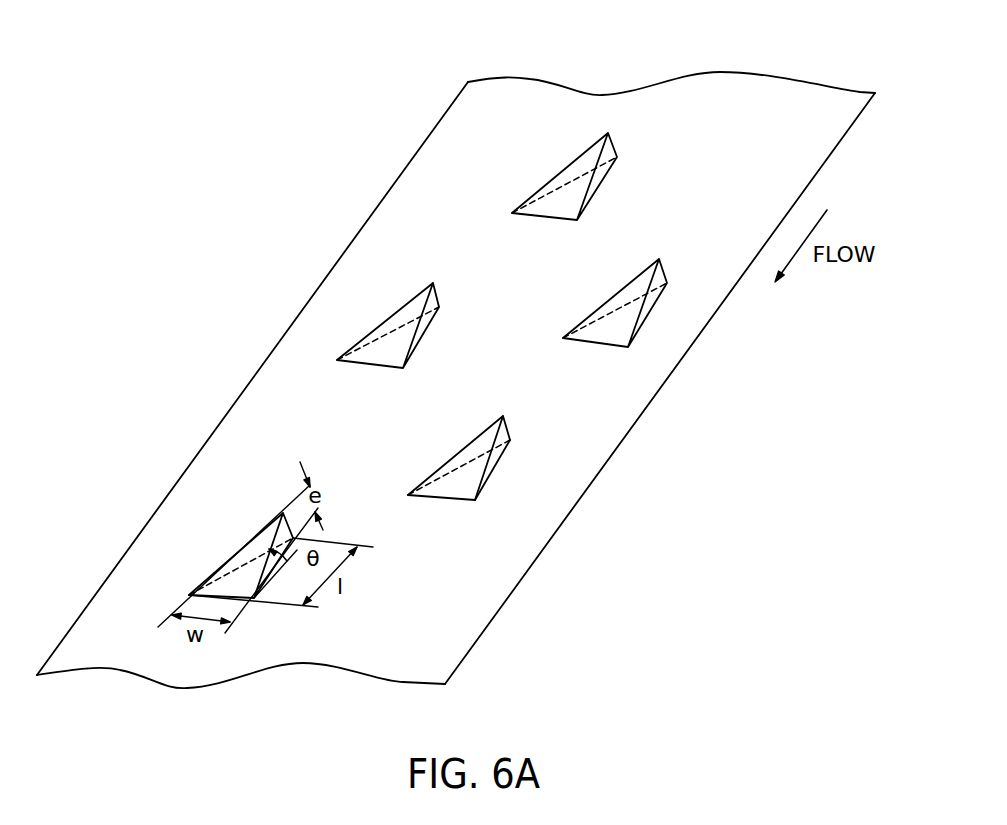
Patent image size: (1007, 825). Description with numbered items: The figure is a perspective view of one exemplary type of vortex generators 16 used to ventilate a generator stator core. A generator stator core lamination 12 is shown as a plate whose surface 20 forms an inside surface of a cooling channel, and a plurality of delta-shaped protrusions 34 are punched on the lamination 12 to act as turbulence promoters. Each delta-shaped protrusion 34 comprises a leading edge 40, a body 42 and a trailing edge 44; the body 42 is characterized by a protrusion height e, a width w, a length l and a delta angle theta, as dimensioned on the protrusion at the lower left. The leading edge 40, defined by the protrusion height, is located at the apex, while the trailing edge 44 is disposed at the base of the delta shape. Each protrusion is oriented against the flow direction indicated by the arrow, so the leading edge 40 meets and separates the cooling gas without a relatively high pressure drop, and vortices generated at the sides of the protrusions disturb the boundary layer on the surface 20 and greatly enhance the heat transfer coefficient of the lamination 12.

The generator stator core lamination 12 is at (833, 153).
The vortex generators 16 is at (541, 135).
The surface of the laminations 20 is at (593, 430).
The delta-shaped protrusions 34 is at (650, 302).
The leading edge 40 is at (510, 425).
The body 42 is at (498, 455).
The trailing edge 44 is at (448, 502).